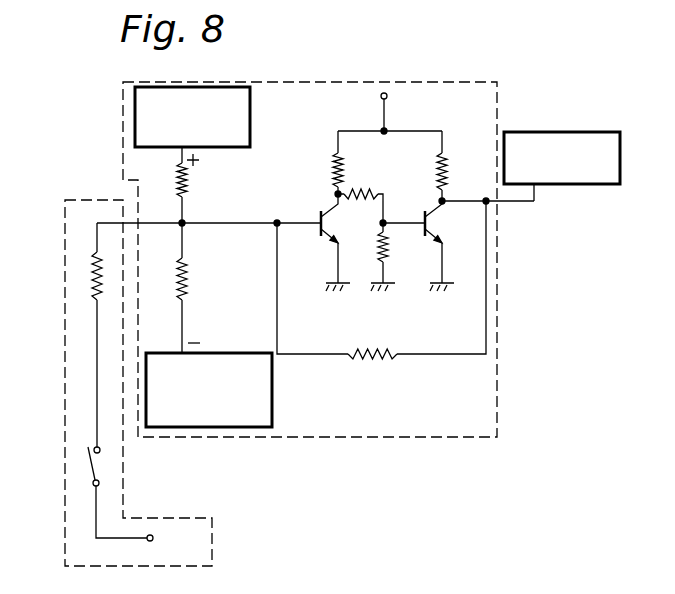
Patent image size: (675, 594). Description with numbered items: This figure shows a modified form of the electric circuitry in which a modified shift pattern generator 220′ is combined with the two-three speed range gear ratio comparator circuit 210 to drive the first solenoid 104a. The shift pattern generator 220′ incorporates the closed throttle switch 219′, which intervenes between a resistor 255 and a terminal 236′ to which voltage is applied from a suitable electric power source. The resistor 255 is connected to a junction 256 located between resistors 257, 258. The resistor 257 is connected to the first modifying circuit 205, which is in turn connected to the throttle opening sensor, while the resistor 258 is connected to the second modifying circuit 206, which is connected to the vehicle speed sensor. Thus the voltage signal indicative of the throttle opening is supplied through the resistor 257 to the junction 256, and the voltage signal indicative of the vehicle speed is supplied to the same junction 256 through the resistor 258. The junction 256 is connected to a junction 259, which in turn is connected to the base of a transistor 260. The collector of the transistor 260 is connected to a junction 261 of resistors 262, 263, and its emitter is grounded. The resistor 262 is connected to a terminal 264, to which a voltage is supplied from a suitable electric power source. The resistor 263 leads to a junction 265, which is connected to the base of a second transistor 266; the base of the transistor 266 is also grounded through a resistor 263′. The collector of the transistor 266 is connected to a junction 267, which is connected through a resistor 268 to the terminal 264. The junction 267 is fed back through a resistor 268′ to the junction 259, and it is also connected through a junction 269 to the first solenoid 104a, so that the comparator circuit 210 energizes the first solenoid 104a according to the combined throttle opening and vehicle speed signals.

The 2-3 speed range gear ratio comparator circuit 210 is at (350, 81).
The shift pattern generator 220′ is at (195, 568).
The first modifying circuit 205 is at (250, 93).
The second modifying circuit 206 is at (272, 388).
The first solenoid 104a is at (548, 132).
The resistor 257 is at (188, 178).
The junction 256 is at (185, 221).
The resistor 258 is at (188, 283).
The resistor 255 is at (92, 280).
The closed throttle switch 219′ is at (90, 463).
The terminal 236′ is at (152, 535).
The junction 259 is at (278, 221).
The resistor 268′ is at (368, 360).
The terminal 264 is at (381, 96).
The resistor 262 is at (336, 162).
The junction 261 is at (340, 193).
The resistor 263 is at (359, 200).
The junction 265 is at (388, 232).
The resistor 263′ is at (378, 258).
The transistor 260 is at (329, 240).
The transistor 266 is at (434, 235).
The resistor 268 is at (445, 165).
The junction 267 is at (493, 183).
The junction 269 is at (489, 205).